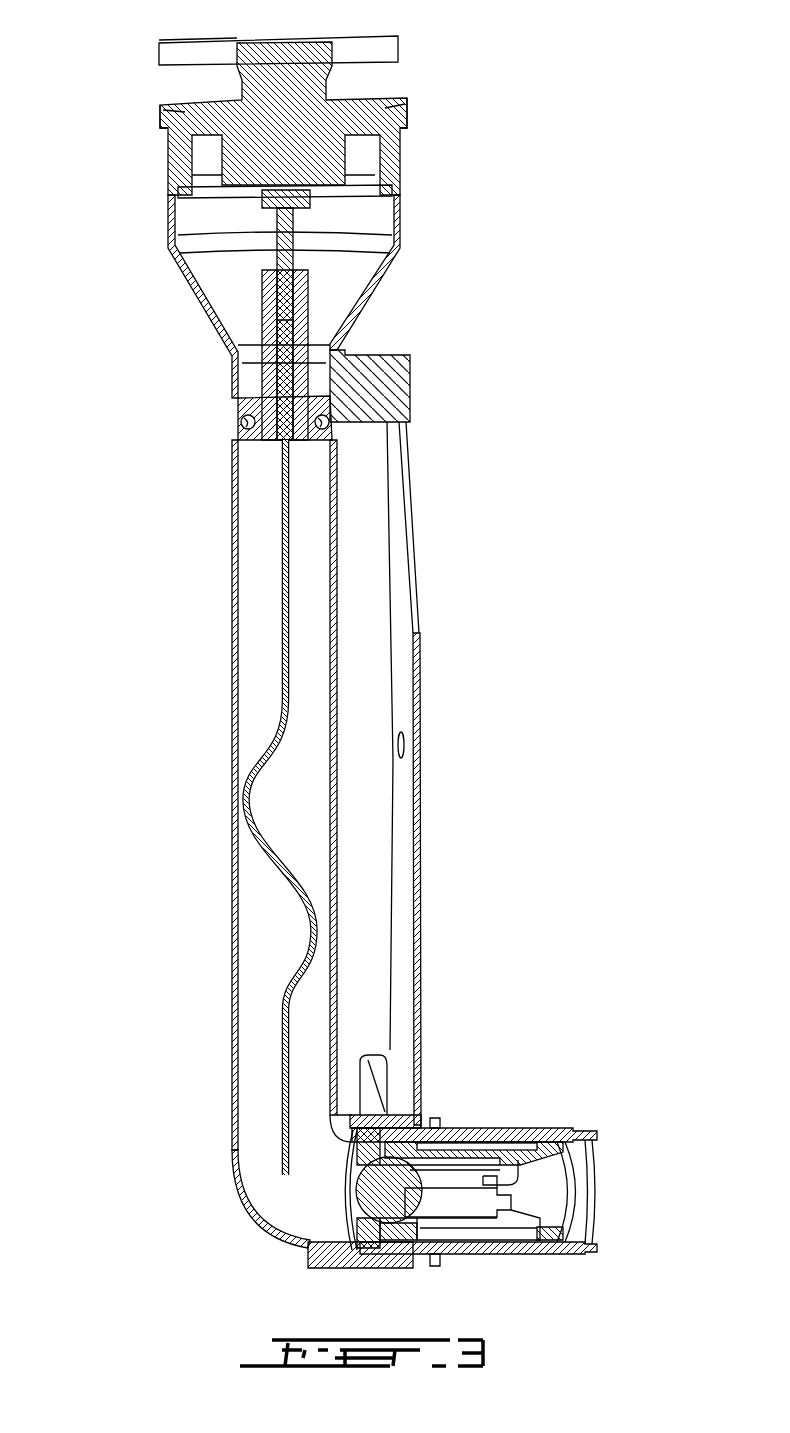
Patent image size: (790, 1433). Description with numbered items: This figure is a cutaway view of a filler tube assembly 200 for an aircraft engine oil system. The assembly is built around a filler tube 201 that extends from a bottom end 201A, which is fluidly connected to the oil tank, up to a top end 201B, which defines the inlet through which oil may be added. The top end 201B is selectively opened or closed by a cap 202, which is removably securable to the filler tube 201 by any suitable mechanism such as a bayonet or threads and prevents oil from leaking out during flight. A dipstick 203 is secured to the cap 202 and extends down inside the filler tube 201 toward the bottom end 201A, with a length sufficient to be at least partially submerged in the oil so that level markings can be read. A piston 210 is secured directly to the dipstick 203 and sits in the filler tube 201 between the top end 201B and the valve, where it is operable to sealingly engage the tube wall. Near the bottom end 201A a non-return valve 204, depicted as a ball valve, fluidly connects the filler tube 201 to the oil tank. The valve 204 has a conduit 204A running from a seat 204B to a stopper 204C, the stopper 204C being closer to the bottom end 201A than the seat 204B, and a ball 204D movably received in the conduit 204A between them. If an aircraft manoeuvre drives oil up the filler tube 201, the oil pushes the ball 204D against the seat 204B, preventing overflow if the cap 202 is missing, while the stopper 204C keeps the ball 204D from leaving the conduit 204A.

The filler tube assembly 200 is at (590, 255).
The filler tube 201 is at (235, 650).
The bottom end 201A is at (583, 1133).
The top end 201B is at (165, 117).
The cap 202 is at (286, 62).
The dipstick 203 is at (283, 533).
The non-return valve 204 is at (488, 1105).
The conduit 204A is at (498, 1252).
The seat 204B is at (355, 1252).
The stopper 204C is at (520, 1140).
The ball 204D is at (377, 1268).
The piston 210 is at (268, 405).